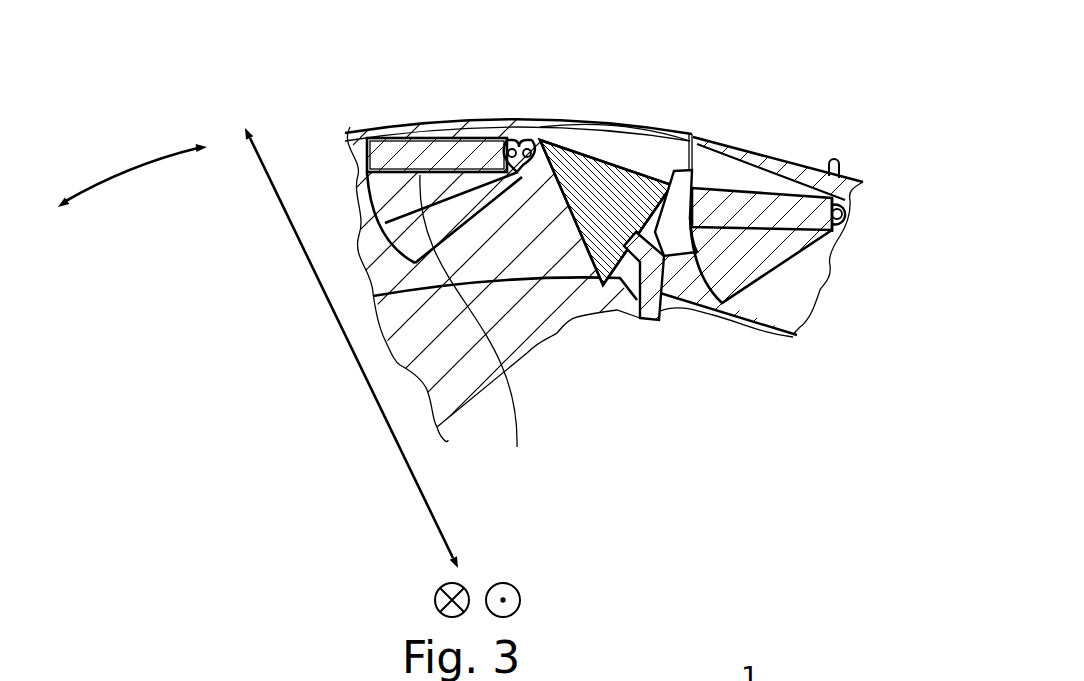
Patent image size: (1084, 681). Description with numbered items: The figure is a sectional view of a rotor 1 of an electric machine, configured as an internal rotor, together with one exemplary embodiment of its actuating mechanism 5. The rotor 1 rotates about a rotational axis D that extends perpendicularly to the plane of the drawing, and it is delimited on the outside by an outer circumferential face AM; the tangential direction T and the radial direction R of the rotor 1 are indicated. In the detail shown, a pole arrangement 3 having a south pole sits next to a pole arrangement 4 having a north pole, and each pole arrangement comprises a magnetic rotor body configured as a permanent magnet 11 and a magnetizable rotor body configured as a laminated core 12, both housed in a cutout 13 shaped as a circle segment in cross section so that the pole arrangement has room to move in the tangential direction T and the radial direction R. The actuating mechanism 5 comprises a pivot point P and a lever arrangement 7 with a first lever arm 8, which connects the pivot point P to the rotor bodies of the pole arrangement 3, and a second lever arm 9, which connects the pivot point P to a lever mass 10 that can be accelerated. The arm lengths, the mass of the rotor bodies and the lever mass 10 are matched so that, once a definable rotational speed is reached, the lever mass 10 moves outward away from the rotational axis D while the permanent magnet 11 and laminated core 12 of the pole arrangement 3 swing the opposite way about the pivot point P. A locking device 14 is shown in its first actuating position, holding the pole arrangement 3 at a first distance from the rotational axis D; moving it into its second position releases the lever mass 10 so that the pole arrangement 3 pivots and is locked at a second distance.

The rotor 1 is at (758, 78).
The pole arrangement 3 is at (344, 214).
The pole arrangement 4 is at (840, 267).
The actuating mechanism 5 is at (540, 300).
The lever arrangement 7 is at (561, 115).
The first lever arm 8 is at (392, 133).
The second lever arm 9 is at (623, 157).
The lever mass 10 is at (606, 212).
The permanent magnet 11 is at (452, 136).
The laminated core 12 is at (520, 188).
The cutout 13 is at (598, 134).
The locking device 14 is at (660, 327).
The pivot point P is at (518, 133).
The outer circumferential face AM is at (834, 162).
The radial direction R is at (352, 352).
The tangential direction T is at (113, 171).
The rotational axis D is at (523, 597).